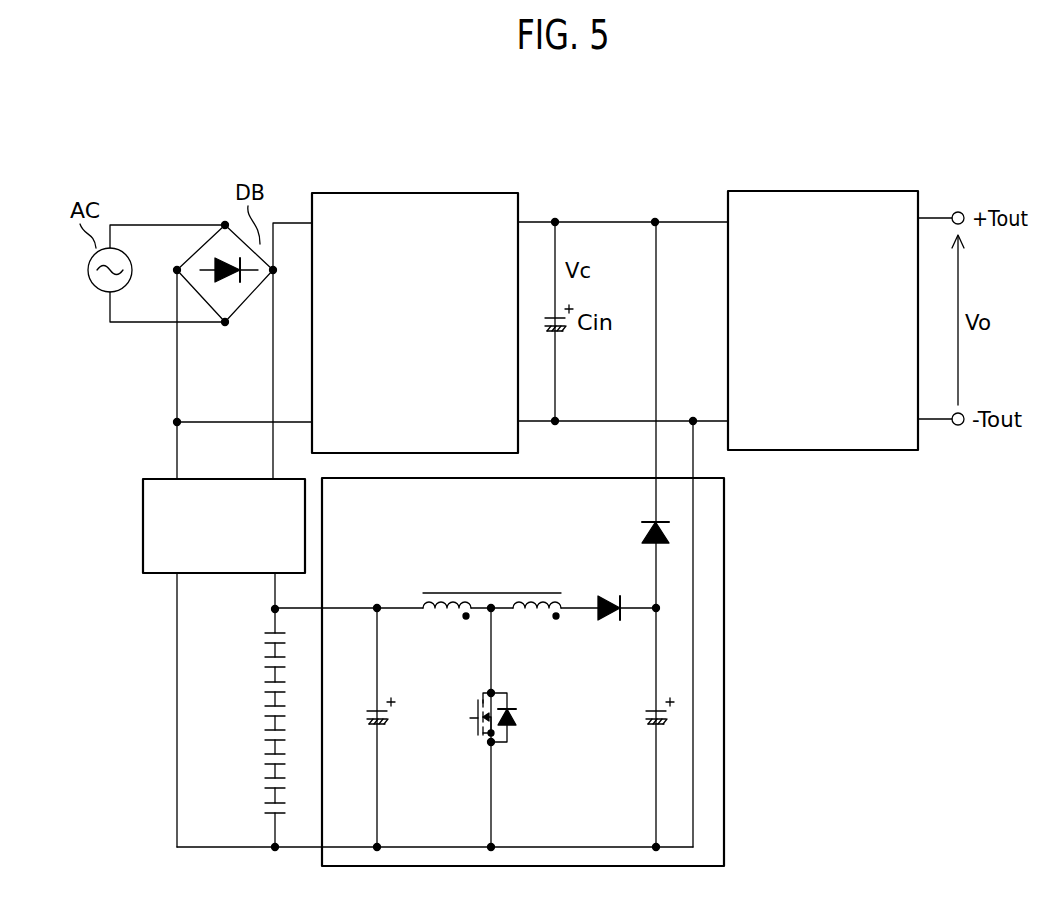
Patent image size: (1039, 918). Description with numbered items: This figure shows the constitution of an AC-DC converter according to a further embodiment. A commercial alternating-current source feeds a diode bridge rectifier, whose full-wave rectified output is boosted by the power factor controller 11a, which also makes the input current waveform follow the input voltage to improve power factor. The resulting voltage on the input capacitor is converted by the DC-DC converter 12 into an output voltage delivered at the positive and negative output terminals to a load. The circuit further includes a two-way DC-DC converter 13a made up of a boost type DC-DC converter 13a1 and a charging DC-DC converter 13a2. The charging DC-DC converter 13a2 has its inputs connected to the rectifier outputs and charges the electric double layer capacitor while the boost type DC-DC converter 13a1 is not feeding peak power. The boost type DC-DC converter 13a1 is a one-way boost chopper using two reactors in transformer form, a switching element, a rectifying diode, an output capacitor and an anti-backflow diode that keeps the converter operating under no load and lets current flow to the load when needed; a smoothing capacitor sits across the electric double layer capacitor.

The power factor controller 11a is at (408, 193).
The DC-DC converter 12 is at (819, 191).
The two-way DC-DC converter 13a is at (148, 616).
The boost type DC-DC converter 13a1 is at (727, 650).
The charging DC-DC converter 13a2 is at (143, 526).